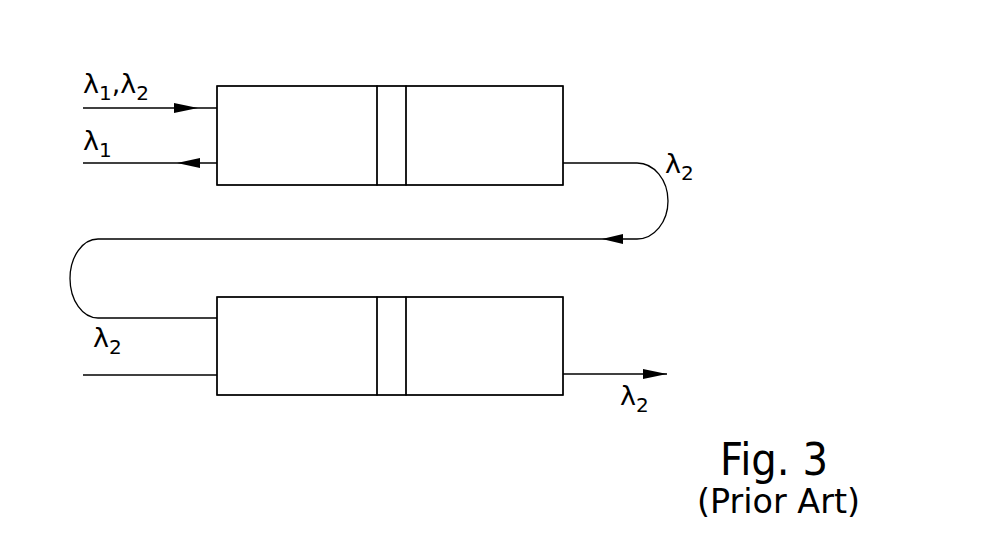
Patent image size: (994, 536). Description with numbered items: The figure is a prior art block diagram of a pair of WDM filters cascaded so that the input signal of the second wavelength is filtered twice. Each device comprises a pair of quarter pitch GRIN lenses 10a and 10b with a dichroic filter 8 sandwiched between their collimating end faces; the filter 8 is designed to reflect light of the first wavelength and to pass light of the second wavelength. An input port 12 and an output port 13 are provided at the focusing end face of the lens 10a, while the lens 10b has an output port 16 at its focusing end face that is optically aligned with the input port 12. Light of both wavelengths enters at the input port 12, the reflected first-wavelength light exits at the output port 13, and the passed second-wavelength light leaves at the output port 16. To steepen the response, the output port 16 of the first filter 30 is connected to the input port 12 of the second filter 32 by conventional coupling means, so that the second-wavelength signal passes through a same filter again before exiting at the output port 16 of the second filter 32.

The dichroic filter 8 is at (388, 86).
The quarter pitch GRIN lens 10a is at (322, 86).
The quarter pitch GRIN lens 10b is at (477, 86).
The input port 12 is at (215, 106).
The output port 13 is at (215, 166).
The output port 16 is at (565, 163).
The first filter 30 is at (612, 93).
The second filter 32 is at (592, 309).